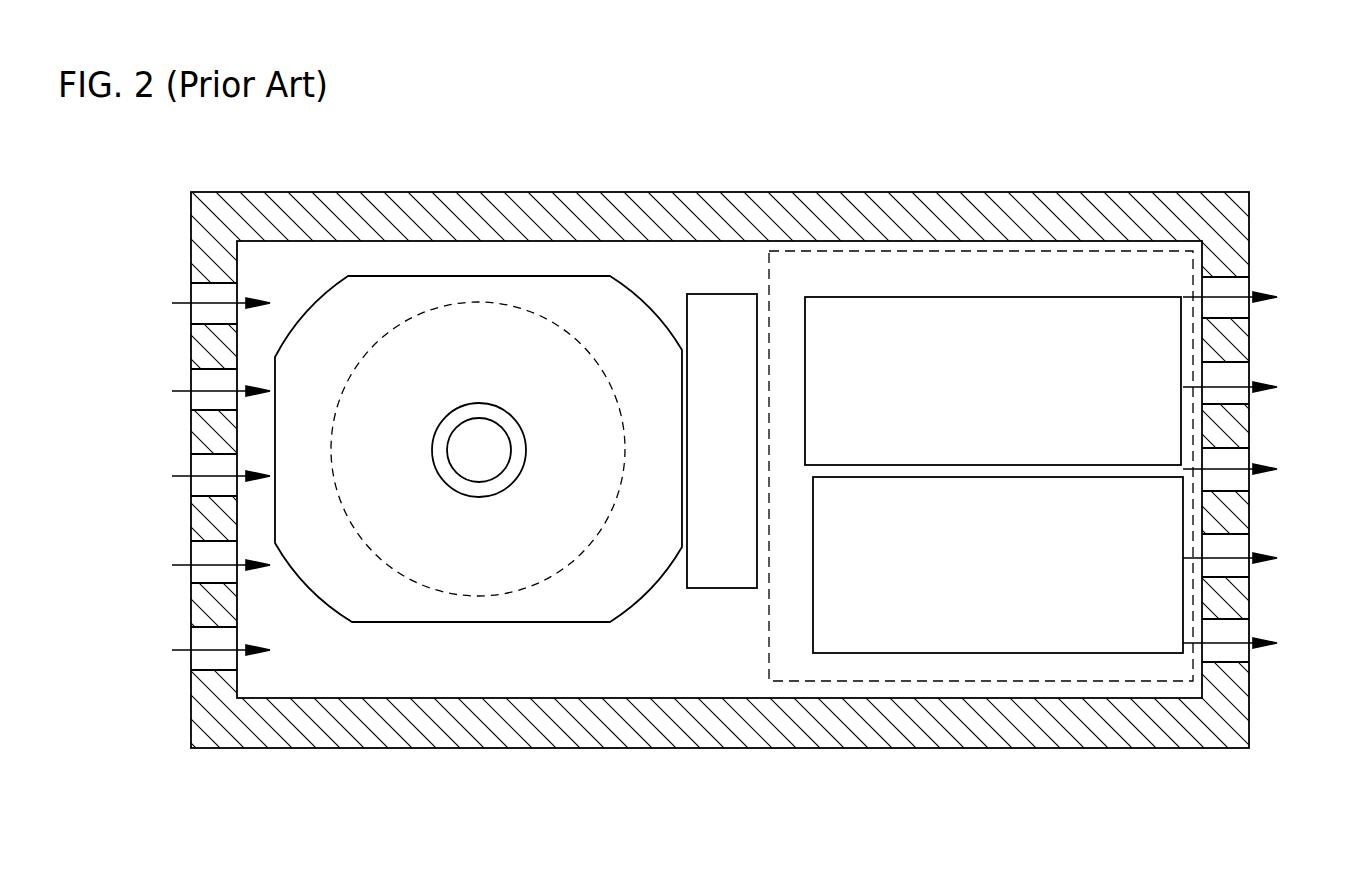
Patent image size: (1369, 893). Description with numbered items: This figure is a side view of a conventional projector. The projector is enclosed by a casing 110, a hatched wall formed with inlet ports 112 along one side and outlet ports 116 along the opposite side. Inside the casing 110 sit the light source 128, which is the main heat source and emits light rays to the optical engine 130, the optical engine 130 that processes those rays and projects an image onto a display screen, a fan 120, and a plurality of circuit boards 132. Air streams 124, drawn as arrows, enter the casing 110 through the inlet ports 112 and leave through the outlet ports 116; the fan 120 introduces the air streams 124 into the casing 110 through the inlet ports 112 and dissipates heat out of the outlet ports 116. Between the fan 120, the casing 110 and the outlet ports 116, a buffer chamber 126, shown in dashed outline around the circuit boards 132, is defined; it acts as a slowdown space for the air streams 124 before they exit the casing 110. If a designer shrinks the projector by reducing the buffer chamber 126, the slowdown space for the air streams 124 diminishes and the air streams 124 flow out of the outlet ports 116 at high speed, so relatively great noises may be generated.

The casing 110 is at (612, 194).
The inlet ports 112 is at (197, 378).
The outlet ports 116 is at (1240, 369).
The fan 120 is at (715, 305).
The air streams 124 is at (178, 305).
The buffer chamber 126 is at (1077, 251).
The light source 128 is at (465, 277).
The optical engine 130 is at (527, 308).
The circuit boards 132 is at (937, 478).